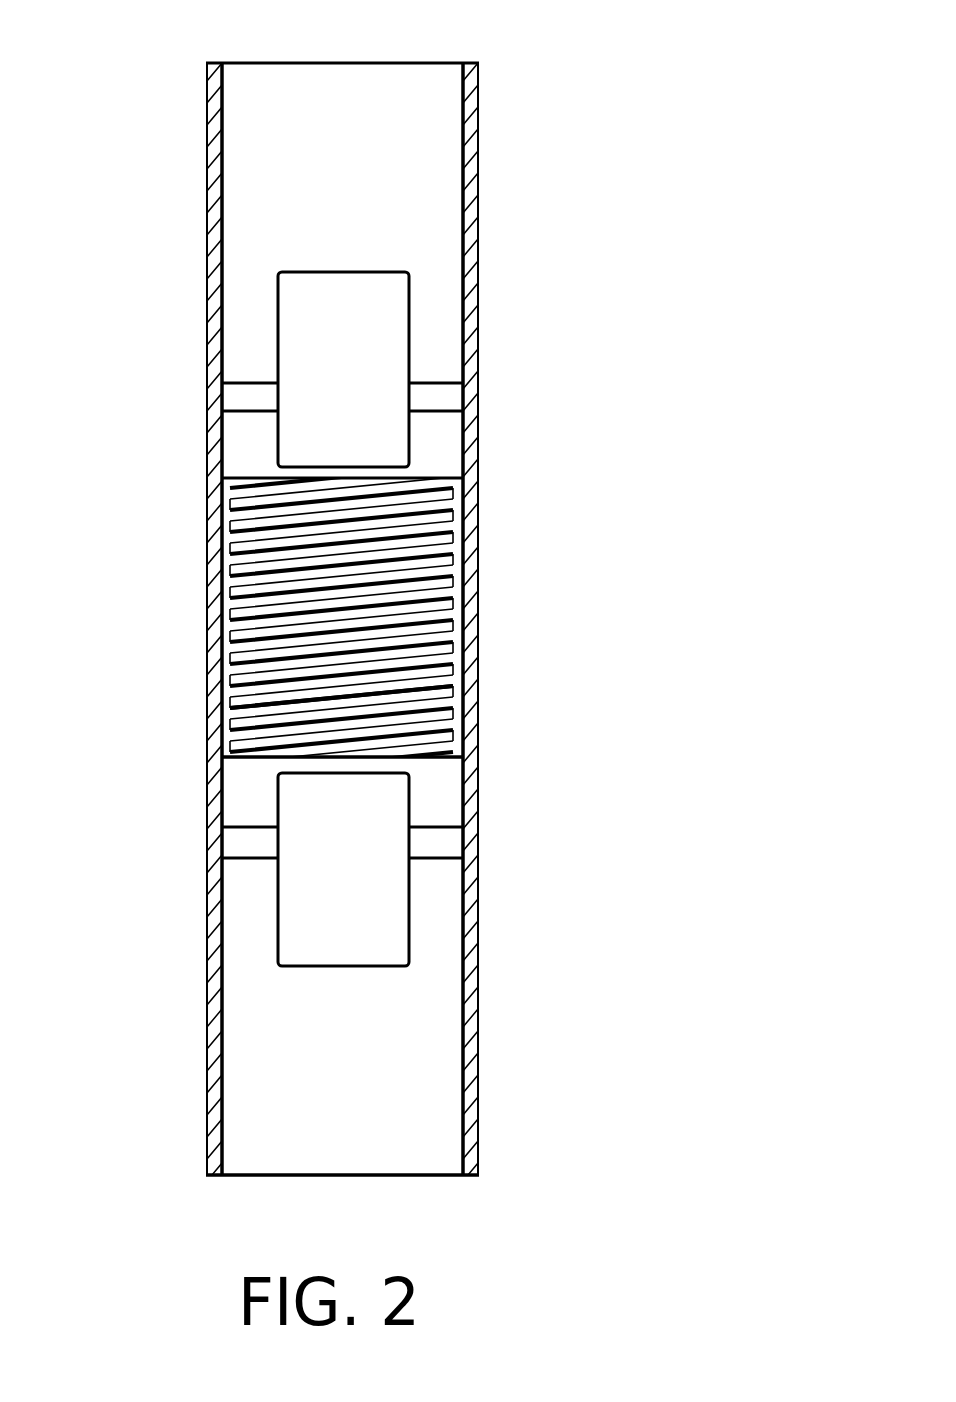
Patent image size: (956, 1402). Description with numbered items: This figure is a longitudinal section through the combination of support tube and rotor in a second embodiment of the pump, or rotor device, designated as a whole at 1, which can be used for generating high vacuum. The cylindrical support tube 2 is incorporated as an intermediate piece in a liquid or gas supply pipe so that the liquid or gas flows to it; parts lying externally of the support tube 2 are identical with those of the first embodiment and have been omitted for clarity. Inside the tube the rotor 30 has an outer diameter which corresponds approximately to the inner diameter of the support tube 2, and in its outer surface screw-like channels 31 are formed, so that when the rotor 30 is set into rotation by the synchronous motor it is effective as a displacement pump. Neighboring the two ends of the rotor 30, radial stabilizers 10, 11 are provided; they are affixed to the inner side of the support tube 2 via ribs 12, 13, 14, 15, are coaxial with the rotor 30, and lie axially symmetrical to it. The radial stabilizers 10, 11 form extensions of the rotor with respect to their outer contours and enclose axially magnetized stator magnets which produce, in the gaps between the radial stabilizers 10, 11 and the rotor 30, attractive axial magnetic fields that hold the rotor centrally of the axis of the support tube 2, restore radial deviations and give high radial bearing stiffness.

The pump 1 is at (520, 70).
The support tube 2 is at (478, 125).
The radial stabilizer 10 is at (400, 288).
The radial stabilizer 11 is at (383, 922).
The rib 12 is at (245, 388).
The rib 13 is at (428, 393).
The rib 14 is at (243, 838).
The rib 15 is at (435, 847).
The rotor 30 is at (480, 578).
The screw-like channel 31 is at (425, 678).